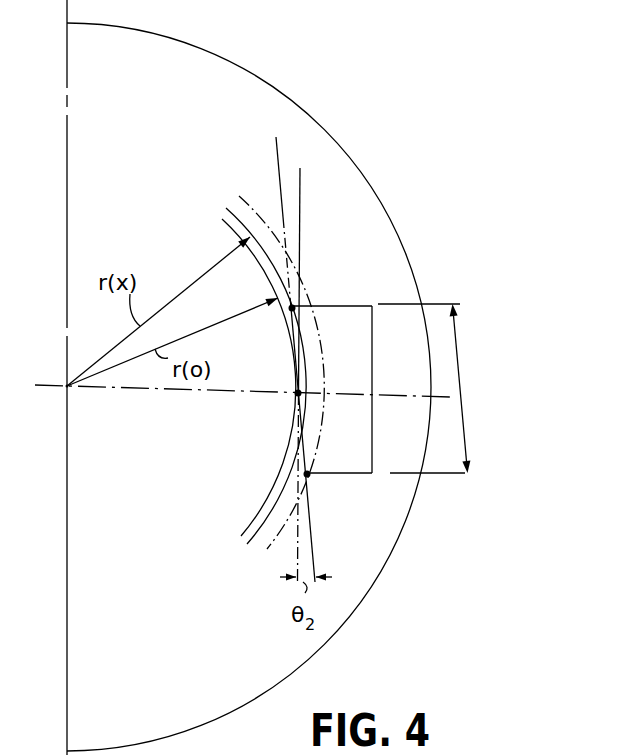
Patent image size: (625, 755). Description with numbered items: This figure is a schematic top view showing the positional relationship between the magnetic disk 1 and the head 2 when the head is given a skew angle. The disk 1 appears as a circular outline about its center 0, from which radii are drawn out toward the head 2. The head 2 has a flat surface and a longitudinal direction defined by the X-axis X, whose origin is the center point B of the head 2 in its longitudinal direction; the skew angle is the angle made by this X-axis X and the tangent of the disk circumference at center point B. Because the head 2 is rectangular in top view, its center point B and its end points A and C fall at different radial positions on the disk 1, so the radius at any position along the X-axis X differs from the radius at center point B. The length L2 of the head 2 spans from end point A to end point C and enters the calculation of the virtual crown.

The disk 1 is at (336, 135).
The head 2 is at (338, 312).
The center point O 0 is at (53, 401).
The X-axis X is at (278, 167).
The length of the head L2 is at (462, 385).
The end point A is at (310, 477).
The center point B is at (292, 398).
The end point C is at (290, 308).